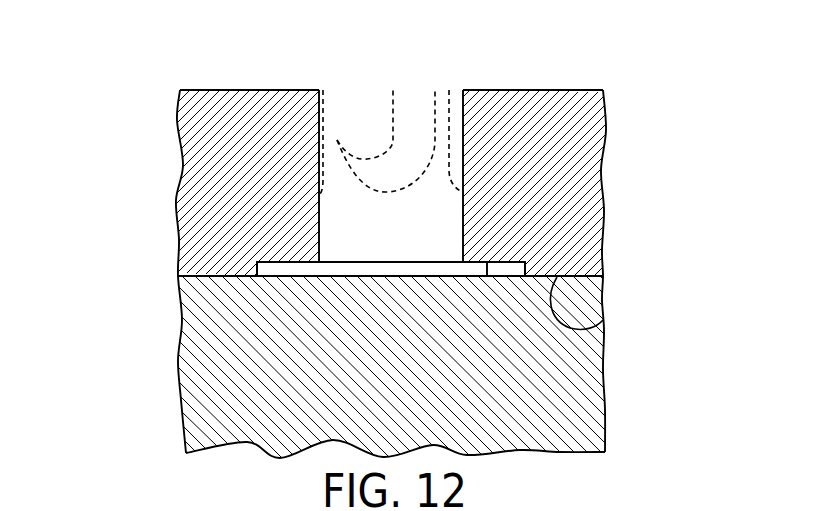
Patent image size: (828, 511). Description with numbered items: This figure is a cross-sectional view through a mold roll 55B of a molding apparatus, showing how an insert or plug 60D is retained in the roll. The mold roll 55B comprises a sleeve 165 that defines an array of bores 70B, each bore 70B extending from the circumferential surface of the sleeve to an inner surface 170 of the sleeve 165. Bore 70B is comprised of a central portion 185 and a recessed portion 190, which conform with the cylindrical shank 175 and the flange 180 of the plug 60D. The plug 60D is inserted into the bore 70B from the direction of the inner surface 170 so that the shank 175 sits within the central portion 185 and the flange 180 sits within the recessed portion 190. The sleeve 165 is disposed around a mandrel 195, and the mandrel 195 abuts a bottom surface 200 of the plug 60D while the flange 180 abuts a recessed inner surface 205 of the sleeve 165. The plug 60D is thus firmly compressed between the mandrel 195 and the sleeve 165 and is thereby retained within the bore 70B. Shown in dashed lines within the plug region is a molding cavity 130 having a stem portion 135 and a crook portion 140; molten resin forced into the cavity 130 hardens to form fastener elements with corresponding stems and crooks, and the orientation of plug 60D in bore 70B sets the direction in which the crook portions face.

The mold roll 55B is at (605, 83).
The bore 70B is at (455, 140).
The sleeve 165 is at (580, 171).
The plug 60D is at (443, 235).
The recessed portion 190 is at (527, 273).
The inner surface 170 is at (560, 327).
The recessed inner surface 205 is at (487, 277).
The mandrel 195 is at (563, 403).
The central portion 185 is at (320, 103).
The molding cavity 130 is at (410, 100).
The stem portion 135 is at (410, 112).
The crook portion 140 is at (372, 175).
The cylindrical shank 175 is at (357, 228).
The flange 180 is at (257, 276).
The bottom surface 200 is at (360, 277).